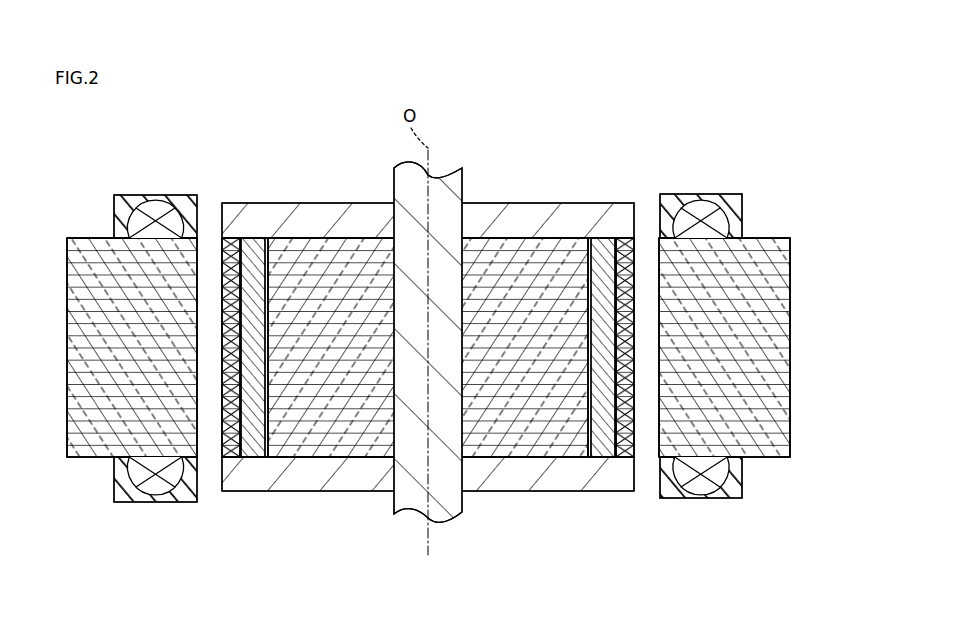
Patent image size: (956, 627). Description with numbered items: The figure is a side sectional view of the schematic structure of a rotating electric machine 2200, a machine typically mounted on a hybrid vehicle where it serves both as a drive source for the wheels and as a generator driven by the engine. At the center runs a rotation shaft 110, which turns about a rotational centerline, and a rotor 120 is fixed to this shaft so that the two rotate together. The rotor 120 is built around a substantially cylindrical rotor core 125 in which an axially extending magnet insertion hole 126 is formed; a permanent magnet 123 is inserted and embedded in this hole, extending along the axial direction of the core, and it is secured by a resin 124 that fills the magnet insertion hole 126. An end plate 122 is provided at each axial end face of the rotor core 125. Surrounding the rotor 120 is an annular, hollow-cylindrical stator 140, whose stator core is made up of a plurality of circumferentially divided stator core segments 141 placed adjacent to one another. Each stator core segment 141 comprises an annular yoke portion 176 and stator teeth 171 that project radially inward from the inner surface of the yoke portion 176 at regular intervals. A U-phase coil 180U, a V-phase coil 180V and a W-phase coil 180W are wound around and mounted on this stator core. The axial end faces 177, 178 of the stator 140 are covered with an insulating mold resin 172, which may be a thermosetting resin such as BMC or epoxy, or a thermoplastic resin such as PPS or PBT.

The rotating electric machine 2200 is at (535, 132).
The rotation shaft 110 is at (458, 508).
The rotor 120 is at (601, 196).
The end plate 122 is at (317, 222).
The permanent magnet 123 is at (255, 455).
The resin 124 is at (250, 460).
The rotor core 125 is at (295, 450).
The magnet insertion hole 126 is at (247, 245).
The stator 140 is at (809, 254).
The stator core segment 141 is at (768, 412).
The stator tooth 171 is at (175, 355).
The mold resin 172 is at (189, 205).
The yoke portion 176 is at (85, 352).
The axial end face 177 is at (770, 236).
The axial end face 178 is at (762, 458).
The U-phase coil 180U is at (449, 386).
The V-phase coil 180V is at (449, 386).
The W-phase coil 180W is at (705, 483).